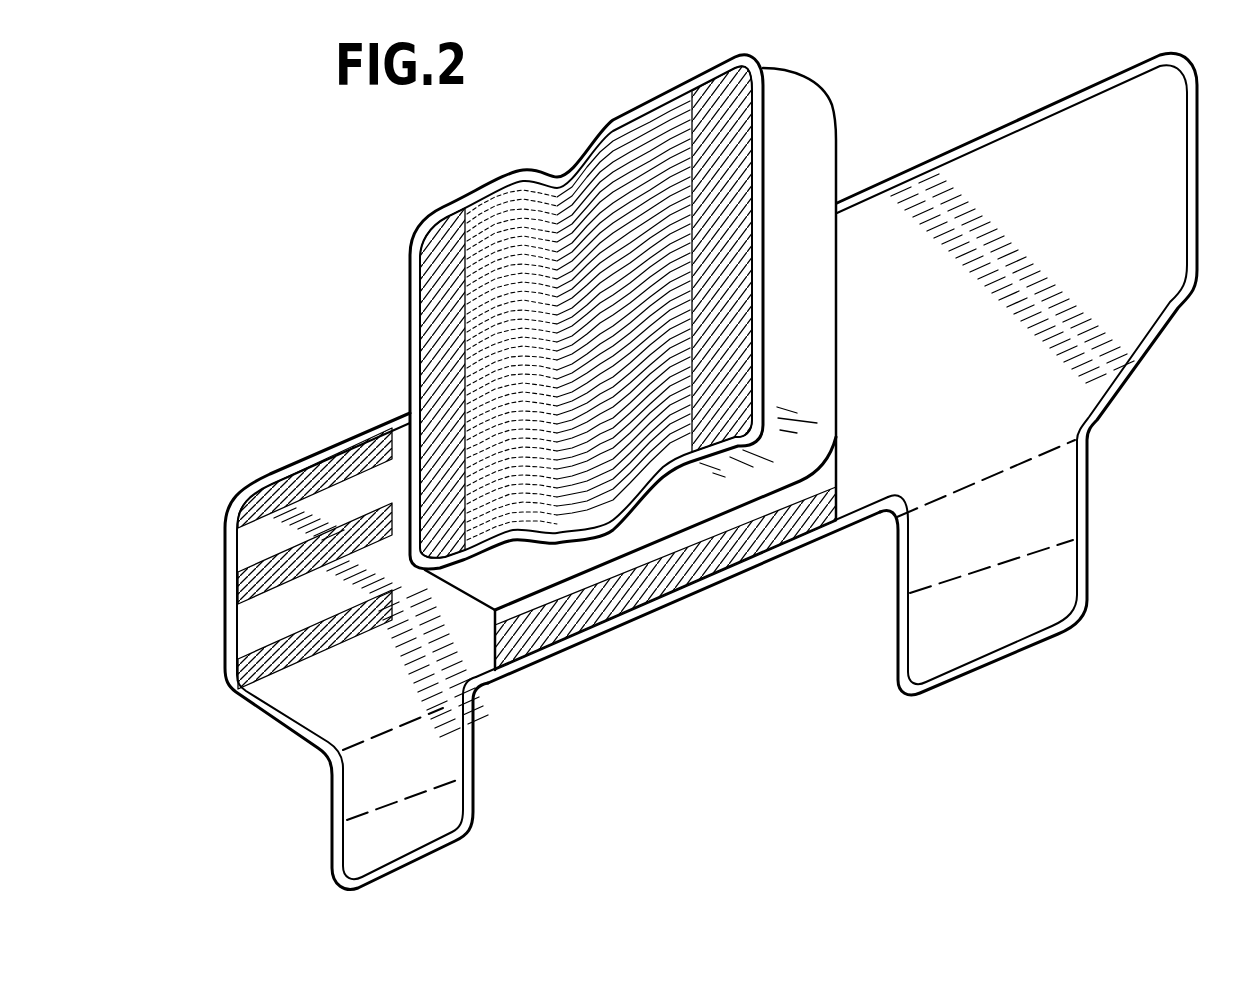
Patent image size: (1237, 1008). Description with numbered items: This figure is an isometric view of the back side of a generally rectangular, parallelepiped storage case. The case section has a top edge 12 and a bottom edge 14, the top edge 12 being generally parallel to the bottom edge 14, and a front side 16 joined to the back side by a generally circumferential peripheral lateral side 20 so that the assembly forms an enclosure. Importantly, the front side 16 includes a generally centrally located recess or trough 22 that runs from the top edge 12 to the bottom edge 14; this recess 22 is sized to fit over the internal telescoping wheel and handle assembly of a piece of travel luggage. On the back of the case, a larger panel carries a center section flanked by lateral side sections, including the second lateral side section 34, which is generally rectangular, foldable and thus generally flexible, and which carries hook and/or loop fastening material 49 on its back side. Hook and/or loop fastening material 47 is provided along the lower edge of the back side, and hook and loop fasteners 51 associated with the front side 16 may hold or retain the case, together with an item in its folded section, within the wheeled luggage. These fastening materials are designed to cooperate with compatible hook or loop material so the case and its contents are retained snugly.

The top edge 12 is at (648, 100).
The bottom edge 14 is at (668, 470).
The front side 16 is at (487, 220).
The lateral side 20 is at (815, 150).
The recess 22 is at (577, 230).
The second lateral side section 34 is at (323, 707).
The hook and/or loop fastening material 47 is at (617, 597).
The hook and/or loop fastening material 49 is at (316, 470).
The hook and loop fasteners 51 is at (733, 148).